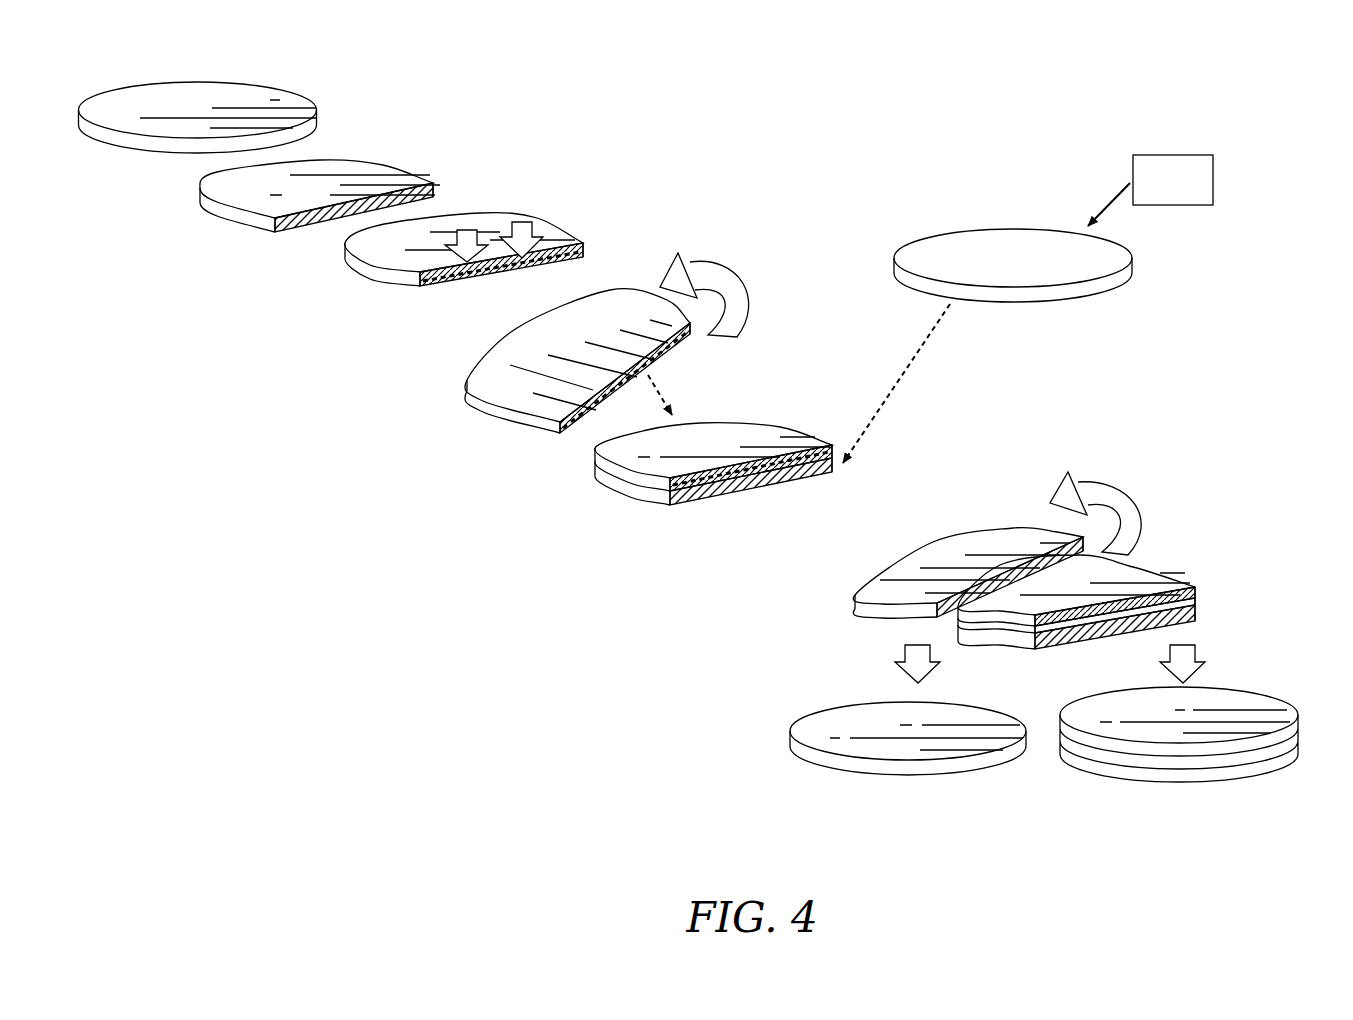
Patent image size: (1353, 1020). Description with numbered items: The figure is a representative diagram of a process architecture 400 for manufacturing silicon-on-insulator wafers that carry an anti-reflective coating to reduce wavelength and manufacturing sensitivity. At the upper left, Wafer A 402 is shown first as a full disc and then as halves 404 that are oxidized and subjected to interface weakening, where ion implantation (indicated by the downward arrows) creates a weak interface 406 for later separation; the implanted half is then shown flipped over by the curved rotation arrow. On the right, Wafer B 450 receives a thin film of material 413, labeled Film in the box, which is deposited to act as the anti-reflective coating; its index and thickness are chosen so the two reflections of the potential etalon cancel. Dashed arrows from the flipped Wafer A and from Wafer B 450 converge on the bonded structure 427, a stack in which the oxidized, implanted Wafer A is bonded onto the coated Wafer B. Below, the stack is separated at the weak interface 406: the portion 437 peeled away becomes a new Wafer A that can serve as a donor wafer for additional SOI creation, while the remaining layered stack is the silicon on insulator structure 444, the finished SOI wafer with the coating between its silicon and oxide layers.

The process architecture 400 is at (1200, 62).
The Wafer A 402 is at (186, 80).
The half of first wafer A 404 is at (398, 169).
The weak interface 406 is at (597, 250).
The thin film of material 413 is at (1180, 157).
The bonded structure 427 is at (772, 405).
The separated wafer A portion 437 is at (892, 548).
The silicon on insulator structure 444 is at (1192, 562).
The Wafer B 450 is at (1013, 228).